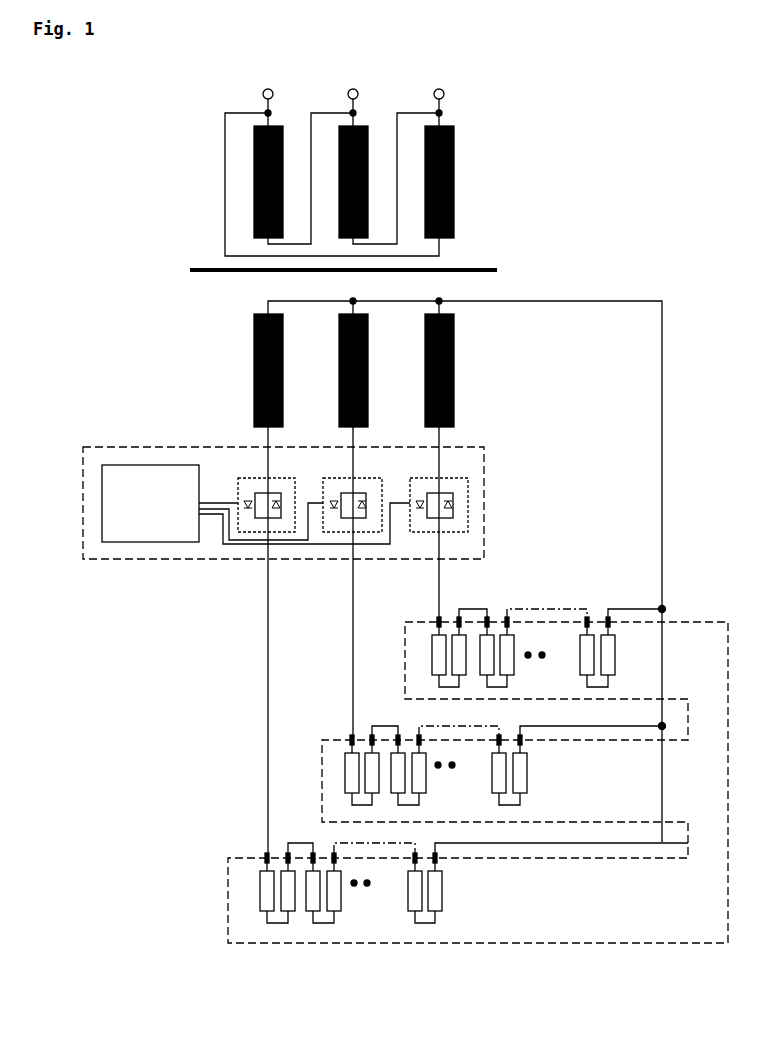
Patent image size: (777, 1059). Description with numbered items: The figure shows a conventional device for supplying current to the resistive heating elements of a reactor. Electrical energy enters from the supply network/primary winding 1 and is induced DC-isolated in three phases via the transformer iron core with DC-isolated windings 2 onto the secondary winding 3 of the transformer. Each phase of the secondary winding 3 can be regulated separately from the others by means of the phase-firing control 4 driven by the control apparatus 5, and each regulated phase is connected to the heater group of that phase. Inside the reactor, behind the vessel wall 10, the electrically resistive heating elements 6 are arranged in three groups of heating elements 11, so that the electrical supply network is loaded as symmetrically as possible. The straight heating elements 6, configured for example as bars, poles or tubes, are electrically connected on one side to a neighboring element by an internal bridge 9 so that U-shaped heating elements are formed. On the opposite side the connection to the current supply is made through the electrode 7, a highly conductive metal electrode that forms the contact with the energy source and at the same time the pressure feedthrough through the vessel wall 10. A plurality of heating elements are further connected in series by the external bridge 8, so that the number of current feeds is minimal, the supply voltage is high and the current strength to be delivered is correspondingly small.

The supply network/primary winding 1 is at (454, 180).
The transformer iron core with DC-isolated windings 2 is at (497, 266).
The secondary winding 3 is at (454, 388).
The phase-firing control 4 is at (453, 498).
The control apparatus 5 is at (175, 538).
The electrically resistive heating elements 6 is at (270, 887).
The electrode for connection to the heating elements 7 is at (267, 857).
The external bridge for series connection of a plurality of heating elements 8 is at (472, 607).
The internal bridge for series connection between two heating elements 9 is at (279, 923).
The vessel wall 10 is at (688, 620).
The group of heating elements 11 is at (383, 775).